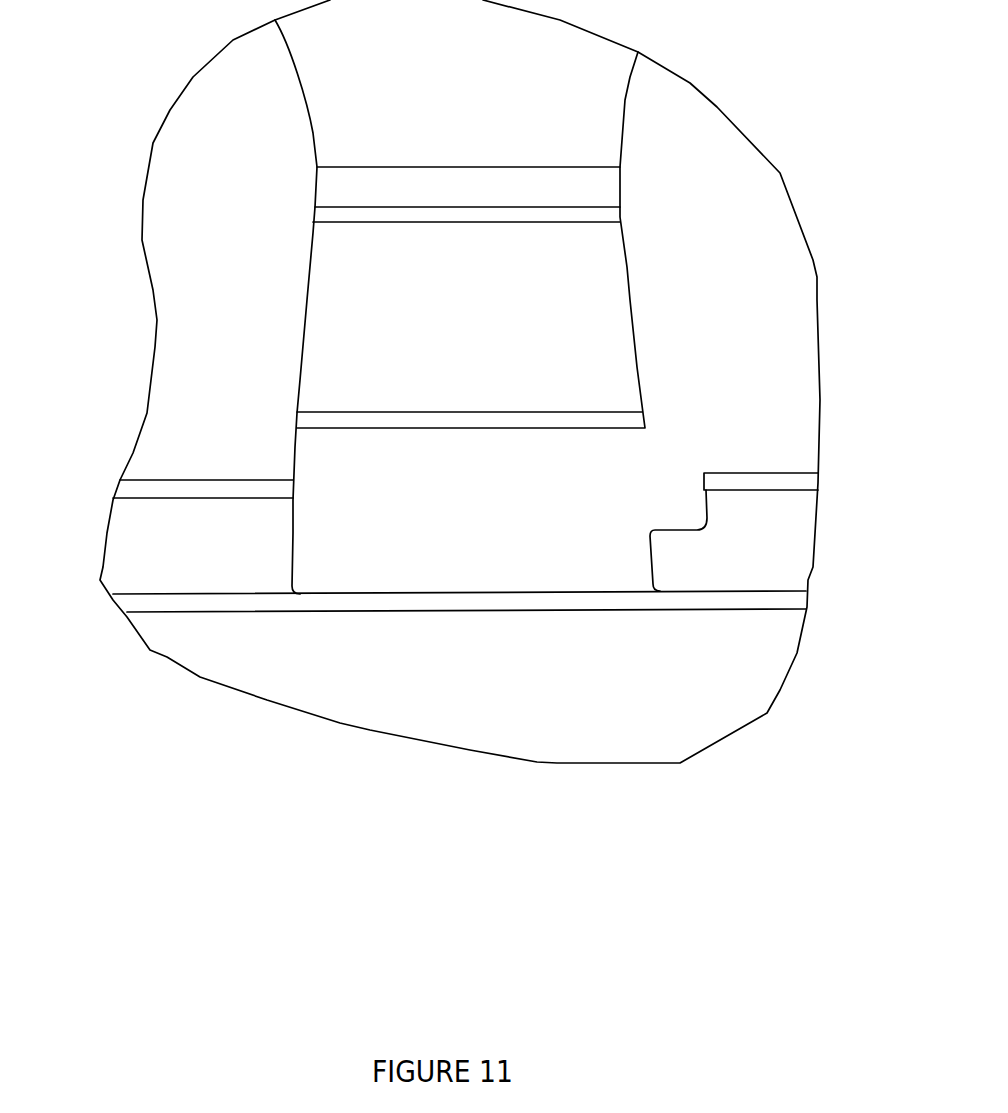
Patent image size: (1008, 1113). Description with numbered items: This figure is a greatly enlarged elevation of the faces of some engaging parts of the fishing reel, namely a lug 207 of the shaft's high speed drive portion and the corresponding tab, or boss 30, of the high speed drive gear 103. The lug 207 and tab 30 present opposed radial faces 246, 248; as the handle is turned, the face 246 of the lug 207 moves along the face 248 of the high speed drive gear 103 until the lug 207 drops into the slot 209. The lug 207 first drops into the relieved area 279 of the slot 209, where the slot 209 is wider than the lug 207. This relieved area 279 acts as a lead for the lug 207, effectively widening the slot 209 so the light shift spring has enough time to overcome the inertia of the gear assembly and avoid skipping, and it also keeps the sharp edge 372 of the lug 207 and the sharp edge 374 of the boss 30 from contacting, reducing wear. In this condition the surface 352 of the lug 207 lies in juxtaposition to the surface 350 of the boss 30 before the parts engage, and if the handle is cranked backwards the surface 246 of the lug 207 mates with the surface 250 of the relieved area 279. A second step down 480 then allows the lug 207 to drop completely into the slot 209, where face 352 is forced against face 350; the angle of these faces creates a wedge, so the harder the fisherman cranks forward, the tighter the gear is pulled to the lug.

The tab 30 is at (180, 533).
The high speed drive gear 103 is at (715, 677).
The lug 207 is at (460, 297).
The slot 209 is at (498, 522).
The radial face 246 is at (472, 428).
The radial face 248 is at (773, 472).
The surface 250 is at (679, 530).
The relieved area 279 is at (665, 508).
The surface 350 is at (293, 533).
The surface 352 is at (307, 322).
The sharp edge 372 is at (295, 430).
The sharp edge 374 is at (293, 480).
The second step down 480 is at (633, 565).